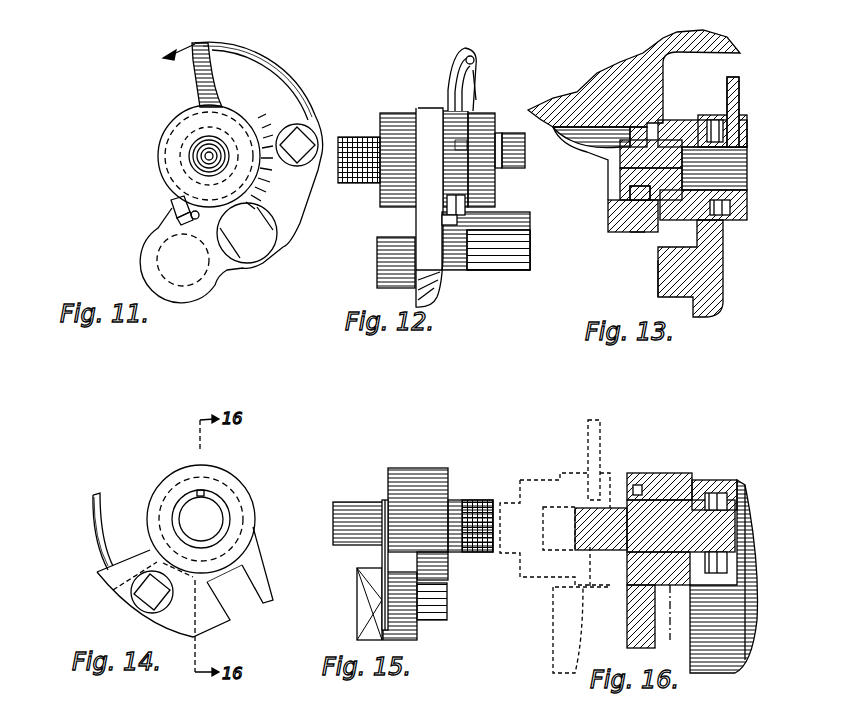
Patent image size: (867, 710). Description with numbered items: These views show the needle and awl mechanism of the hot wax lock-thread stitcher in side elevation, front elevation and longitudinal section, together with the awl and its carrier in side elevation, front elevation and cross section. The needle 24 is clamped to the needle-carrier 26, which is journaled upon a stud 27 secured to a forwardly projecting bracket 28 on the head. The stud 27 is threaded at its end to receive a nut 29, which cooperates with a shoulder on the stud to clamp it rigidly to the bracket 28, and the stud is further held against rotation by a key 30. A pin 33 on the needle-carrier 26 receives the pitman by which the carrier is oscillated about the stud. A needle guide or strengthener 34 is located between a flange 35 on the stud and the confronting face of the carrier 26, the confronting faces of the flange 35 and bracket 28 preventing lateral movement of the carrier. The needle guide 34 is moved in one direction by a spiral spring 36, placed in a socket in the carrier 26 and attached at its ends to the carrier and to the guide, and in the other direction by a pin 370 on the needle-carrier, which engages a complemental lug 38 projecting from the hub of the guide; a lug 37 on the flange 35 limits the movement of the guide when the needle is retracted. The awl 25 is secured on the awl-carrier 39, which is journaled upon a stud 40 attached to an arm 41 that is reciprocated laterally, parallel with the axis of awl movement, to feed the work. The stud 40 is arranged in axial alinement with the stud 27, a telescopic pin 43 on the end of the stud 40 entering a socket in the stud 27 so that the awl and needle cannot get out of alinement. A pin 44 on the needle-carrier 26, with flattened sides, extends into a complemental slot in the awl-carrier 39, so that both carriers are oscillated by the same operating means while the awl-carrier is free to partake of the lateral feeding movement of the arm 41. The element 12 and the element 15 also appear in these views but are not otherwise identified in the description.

In FIG. 13, the shaft 12 is at (748, 163).
In FIG. 16, the shaft 12 is at (543, 520).
In FIG. 14, the notch 15 is at (240, 600).
In FIG. 11, the needle 24 is at (290, 87).
In FIG. 12, the needle 24 is at (477, 90).
In FIG. 14, the awl 25 is at (88, 522).
In FIG. 15, the awl 25 is at (378, 552).
In FIG. 11, the needle-carrier 26 is at (223, 270).
In FIG. 12, the needle-carrier 26 is at (430, 255).
In FIG. 13, the needle-carrier 26 is at (723, 252).
In FIG. 13, the stud 27 is at (622, 178).
In FIG. 13, the bracket 28 is at (637, 235).
In FIG. 13, the nut 29 is at (630, 196).
In FIG. 13, the key 30 is at (620, 154).
In FIG. 16, the key 30 is at (655, 473).
In FIG. 11, the pin 33 is at (157, 260).
In FIG. 12, the pin 33 is at (380, 260).
In FIG. 13, the pin 33 is at (667, 283).
In FIG. 11, the needle guide or strengthener 34 is at (202, 85).
In FIG. 12, the needle guide or strengthener 34 is at (450, 76).
In FIG. 13, the needle guide or strengthener 34 is at (740, 86).
In FIG. 16, the needle guide or strengthener 34 is at (588, 432).
In FIG. 12, the flange 35 is at (463, 147).
In FIG. 13, the flange 35 is at (750, 122).
In FIG. 13, the spring 36 is at (748, 208).
In FIG. 11, the lug 37 is at (171, 198).
In FIG. 12, the lug 37 is at (453, 203).
In FIG. 11, the lug 38 is at (178, 213).
In FIG. 12, the lug 38 is at (458, 218).
In FIG. 14, the awl-carrier 39 is at (253, 545).
In FIG. 16, the awl-carrier 39 is at (627, 617).
In FIG. 16, the stud 40 is at (690, 477).
In FIG. 16, the arm 41 is at (738, 610).
In FIG. 14, the pin 43 is at (210, 510).
In FIG. 15, the pin 43 is at (350, 510).
In FIG. 16, the pin 43 is at (588, 548).
In FIG. 11, the pin 44 is at (260, 247).
In FIG. 12, the pin 44 is at (530, 237).
In FIG. 16, the pin 44 is at (670, 630).
In FIG. 11, the pin 370 is at (197, 220).